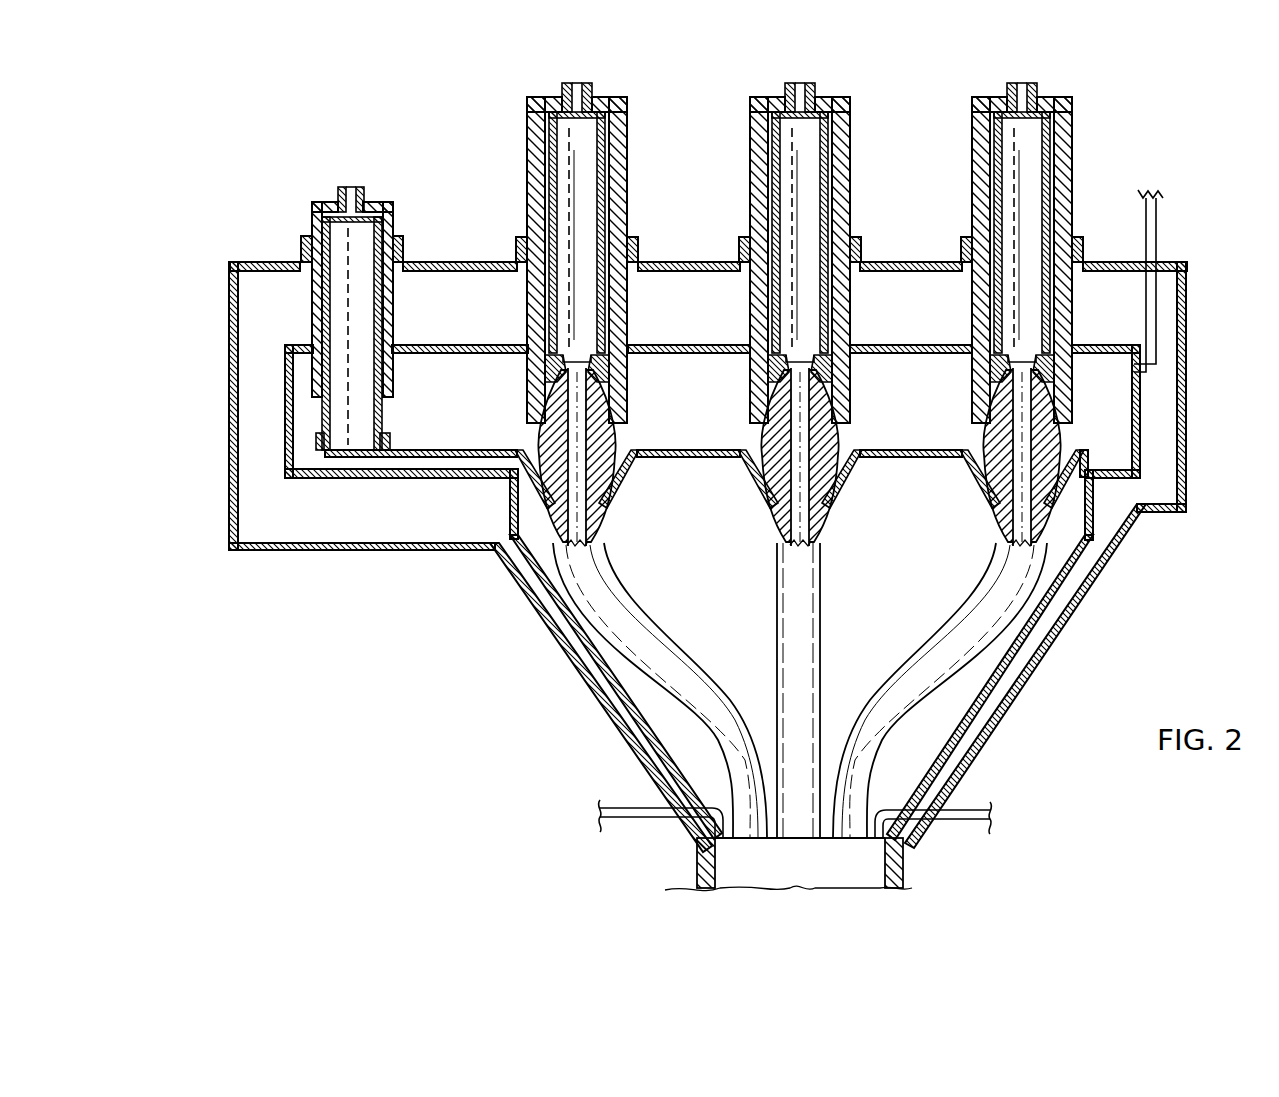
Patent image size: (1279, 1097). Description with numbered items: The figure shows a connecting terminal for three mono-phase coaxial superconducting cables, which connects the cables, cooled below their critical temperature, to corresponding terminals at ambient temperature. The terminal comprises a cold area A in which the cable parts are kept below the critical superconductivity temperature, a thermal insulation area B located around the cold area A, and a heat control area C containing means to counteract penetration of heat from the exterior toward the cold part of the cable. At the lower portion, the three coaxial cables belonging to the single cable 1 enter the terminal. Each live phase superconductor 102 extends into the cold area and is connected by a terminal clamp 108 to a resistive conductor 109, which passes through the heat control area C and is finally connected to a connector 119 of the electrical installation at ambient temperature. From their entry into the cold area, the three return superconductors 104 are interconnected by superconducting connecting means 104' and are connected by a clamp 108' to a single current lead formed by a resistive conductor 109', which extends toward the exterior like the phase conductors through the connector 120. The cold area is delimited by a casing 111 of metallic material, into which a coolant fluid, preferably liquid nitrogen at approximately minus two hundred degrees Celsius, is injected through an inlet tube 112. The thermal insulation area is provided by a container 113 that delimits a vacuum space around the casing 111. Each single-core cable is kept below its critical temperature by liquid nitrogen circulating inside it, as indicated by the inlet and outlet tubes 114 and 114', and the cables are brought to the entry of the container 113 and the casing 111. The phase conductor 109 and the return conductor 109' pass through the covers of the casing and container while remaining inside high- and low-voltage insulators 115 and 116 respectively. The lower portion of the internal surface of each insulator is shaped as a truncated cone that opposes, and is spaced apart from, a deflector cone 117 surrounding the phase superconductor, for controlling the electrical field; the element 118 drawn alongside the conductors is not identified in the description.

The cable 1 is at (705, 862).
The live phase superconductor 102 is at (567, 400).
The return superconductor 104 is at (799, 506).
The superconducting connecting means 104' is at (643, 427).
The terminal clamp 108 is at (712, 326).
The clamp 108' is at (384, 410).
The resistive conductor 109 is at (848, 232).
The resistive conductor 109' is at (394, 333).
The casing 111 is at (1140, 455).
The inlet tube 112 is at (1160, 195).
The container 113 is at (228, 363).
The inlet tube 114 is at (957, 795).
The outlet tube 114' is at (638, 788).
The high-voltage insulator 115 is at (623, 173).
The low-voltage insulator 116 is at (390, 220).
The deflector cone 117 is at (607, 410).
The conductor 118 is at (578, 230).
The connector 119 is at (580, 84).
The connector 120 is at (357, 193).
The cold area A is at (1107, 412).
The thermal insulation area B is at (278, 500).
The heat control area C is at (343, 291).